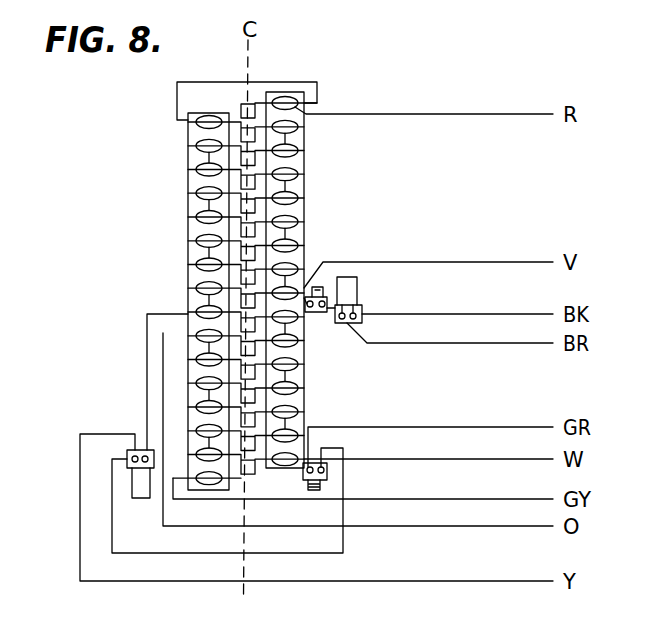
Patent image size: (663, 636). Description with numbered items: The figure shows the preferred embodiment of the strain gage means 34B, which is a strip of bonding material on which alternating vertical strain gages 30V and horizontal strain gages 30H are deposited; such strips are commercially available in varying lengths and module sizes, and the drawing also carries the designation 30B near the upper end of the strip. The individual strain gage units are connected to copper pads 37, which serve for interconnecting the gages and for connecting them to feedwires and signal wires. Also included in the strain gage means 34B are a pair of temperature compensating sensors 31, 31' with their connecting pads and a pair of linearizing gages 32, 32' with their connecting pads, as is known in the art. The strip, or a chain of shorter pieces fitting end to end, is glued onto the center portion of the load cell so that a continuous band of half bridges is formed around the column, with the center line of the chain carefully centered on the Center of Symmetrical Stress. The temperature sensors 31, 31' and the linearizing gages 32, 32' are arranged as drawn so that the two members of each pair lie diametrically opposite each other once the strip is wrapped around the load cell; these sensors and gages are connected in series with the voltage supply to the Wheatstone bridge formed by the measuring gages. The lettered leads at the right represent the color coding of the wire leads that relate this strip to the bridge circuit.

The vertical strain gage 30V is at (241, 104).
The horizontal strain gage 30H is at (249, 133).
The base element 30B is at (258, 88).
The strain gage means 34B is at (160, 178).
The pads 37 is at (299, 170).
The temperature compensating sensor 31 is at (364, 300).
The temperature compensating sensor 31' is at (135, 446).
The linearizing gage 32 is at (334, 441).
The linearizing gage 32' is at (328, 326).